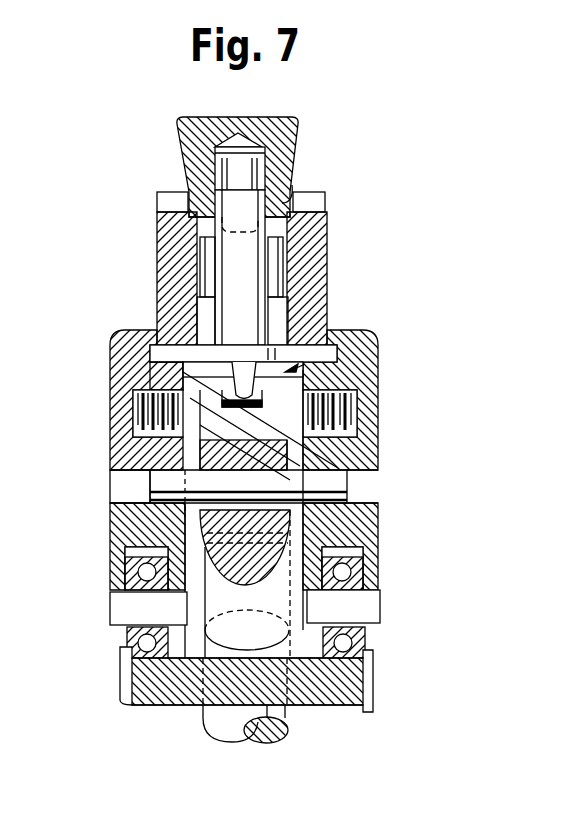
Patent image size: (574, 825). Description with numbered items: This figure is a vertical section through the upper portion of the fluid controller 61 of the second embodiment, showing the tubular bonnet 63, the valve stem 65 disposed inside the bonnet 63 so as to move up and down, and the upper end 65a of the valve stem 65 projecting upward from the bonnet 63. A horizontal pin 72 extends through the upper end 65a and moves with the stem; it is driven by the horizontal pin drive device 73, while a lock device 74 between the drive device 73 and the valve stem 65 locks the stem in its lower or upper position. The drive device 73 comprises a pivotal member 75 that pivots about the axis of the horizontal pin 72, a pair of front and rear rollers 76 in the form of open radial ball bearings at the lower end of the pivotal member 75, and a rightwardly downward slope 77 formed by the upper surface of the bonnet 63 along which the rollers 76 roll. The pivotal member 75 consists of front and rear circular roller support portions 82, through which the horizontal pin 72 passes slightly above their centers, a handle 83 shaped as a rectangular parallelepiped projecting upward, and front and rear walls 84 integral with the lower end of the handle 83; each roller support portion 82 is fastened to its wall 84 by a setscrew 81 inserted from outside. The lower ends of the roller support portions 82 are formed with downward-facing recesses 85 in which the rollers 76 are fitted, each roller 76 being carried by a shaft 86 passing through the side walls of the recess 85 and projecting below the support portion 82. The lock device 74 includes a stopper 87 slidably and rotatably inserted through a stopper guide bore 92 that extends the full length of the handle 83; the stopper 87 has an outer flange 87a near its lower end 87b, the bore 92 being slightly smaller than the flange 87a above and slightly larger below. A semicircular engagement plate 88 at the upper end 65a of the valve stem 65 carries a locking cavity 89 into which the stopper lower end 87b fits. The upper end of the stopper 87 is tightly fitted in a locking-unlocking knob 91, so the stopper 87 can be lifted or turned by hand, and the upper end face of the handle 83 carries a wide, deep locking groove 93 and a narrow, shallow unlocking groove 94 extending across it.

The fluid controller 61 is at (413, 505).
The tubular bonnet 63 is at (357, 680).
The valve stem 65 is at (213, 720).
The upper end of the valve stem 65a is at (380, 487).
The horizontal pin 72 is at (110, 495).
The horizontal pin drive device 73 is at (380, 514).
The lock device 74 is at (345, 328).
The pivotal member 75 is at (380, 356).
The rollers 76 is at (380, 580).
The slope 77 is at (193, 653).
The setscrew 81 is at (363, 425).
The roller support portions 82 is at (380, 548).
The handle 83 is at (317, 278).
The walls 84 is at (132, 362).
The recesses 85 is at (110, 551).
The shaft 86 is at (120, 605).
The stopper 87 is at (252, 255).
The outer flange 87a is at (250, 362).
The lower end of the stopper 87b is at (118, 338).
The semicircular engagement plate 88 is at (210, 428).
The locking cavity 89 is at (317, 405).
The locking-unlocking knob 91 is at (300, 127).
The stopper guide bore 92 is at (197, 252).
The locking groove 93 is at (283, 197).
The unlocking groove 94 is at (157, 192).